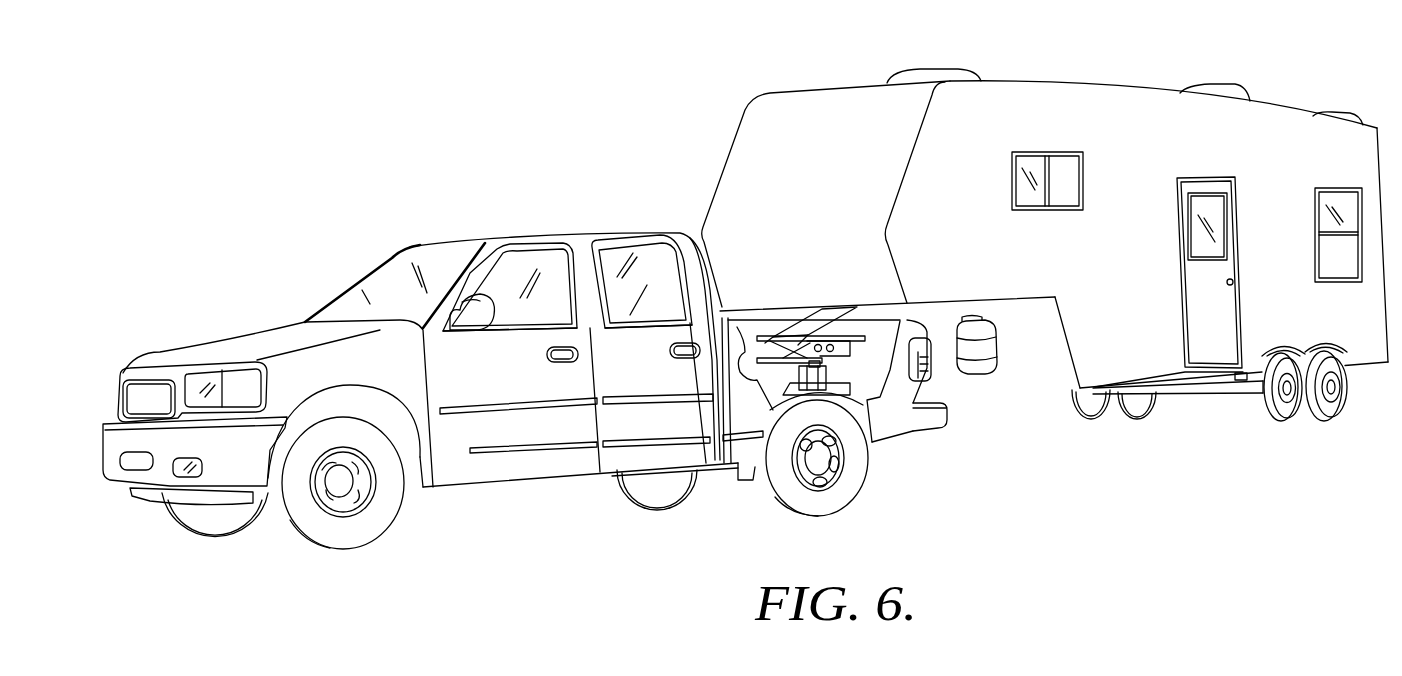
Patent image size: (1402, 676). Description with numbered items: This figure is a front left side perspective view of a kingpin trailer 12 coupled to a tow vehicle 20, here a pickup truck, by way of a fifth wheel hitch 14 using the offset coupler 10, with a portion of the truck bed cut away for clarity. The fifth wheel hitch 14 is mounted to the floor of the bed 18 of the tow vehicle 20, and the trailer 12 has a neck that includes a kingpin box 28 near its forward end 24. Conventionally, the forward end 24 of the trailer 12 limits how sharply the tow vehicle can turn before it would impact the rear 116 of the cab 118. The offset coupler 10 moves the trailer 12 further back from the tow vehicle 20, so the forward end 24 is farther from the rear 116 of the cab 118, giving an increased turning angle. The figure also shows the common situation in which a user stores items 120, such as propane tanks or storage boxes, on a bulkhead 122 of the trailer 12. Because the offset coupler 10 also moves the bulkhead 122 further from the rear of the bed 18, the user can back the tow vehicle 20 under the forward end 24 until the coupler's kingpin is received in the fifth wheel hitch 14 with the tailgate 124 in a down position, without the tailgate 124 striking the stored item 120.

The offset coupler 10 is at (845, 355).
The trailer 12 is at (864, 96).
The fifth wheel hitch 14 is at (579, 374).
The bed 18 is at (910, 433).
The tow vehicle 20 is at (488, 242).
The forward end 24 is at (740, 166).
The kingpin box 28 is at (817, 317).
The rear of cab 116 is at (700, 243).
The cab 118 is at (557, 463).
The stored items 120 is at (977, 372).
The bulkhead 122 is at (1052, 378).
The tailgate 124 is at (892, 322).